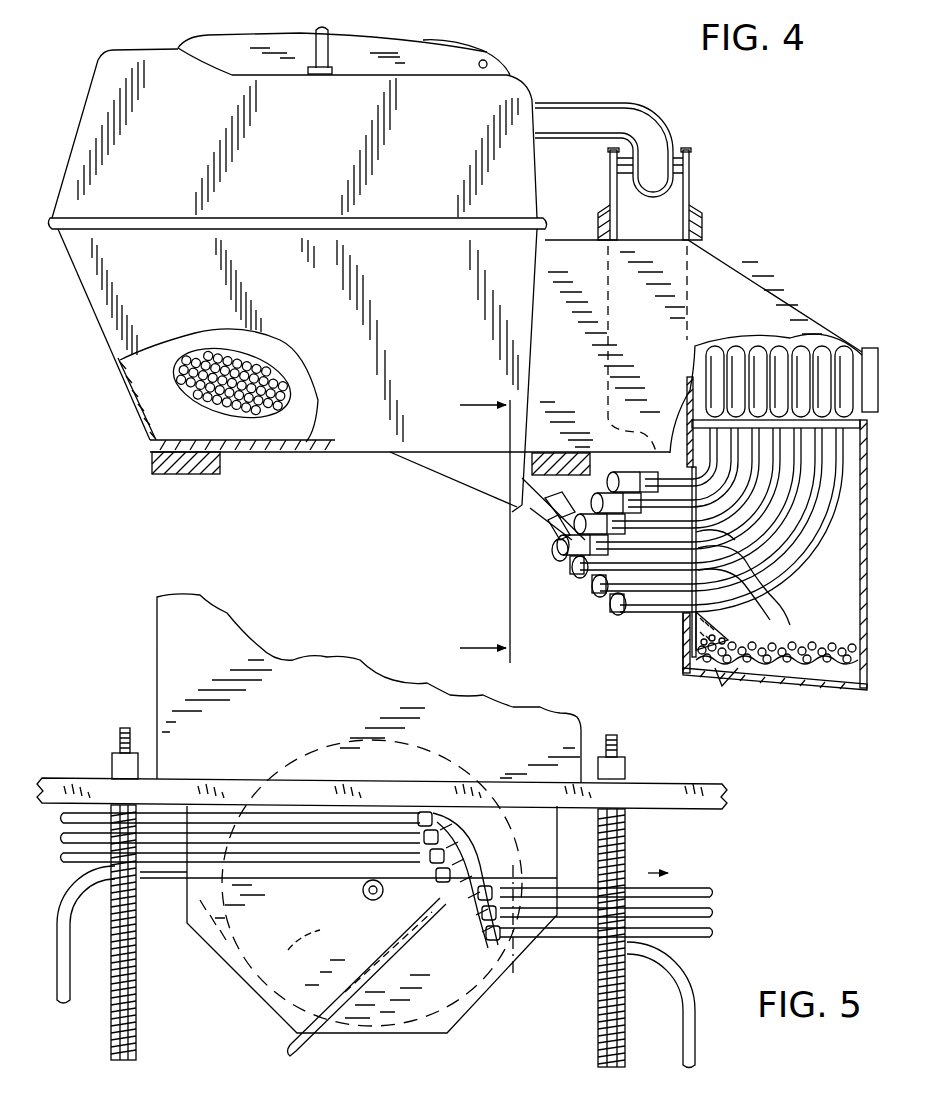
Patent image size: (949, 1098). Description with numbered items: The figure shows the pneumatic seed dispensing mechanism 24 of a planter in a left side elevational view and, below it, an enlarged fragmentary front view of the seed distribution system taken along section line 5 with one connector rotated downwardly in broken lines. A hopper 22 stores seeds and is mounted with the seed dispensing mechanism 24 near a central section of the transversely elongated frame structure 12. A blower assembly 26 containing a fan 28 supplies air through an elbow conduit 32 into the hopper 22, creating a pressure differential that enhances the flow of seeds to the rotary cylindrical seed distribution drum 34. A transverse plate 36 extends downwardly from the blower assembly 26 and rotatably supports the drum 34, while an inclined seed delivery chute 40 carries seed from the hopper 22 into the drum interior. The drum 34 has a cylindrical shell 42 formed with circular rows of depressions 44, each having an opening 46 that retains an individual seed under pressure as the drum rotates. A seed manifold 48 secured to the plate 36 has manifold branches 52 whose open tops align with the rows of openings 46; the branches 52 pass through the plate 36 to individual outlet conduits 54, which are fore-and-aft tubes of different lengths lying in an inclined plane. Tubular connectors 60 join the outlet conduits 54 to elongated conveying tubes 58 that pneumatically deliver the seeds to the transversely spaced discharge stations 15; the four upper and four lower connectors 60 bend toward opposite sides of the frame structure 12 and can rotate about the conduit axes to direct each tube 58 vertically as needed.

In FIG. 4, the section line 5- 5 is at (473, 527).
In FIG. 4, the frame structure 12 is at (200, 478).
In FIG. 5, the frame structure 12 is at (666, 780).
In FIG. 5, the discharge stations 15 is at (88, 1076).
In FIG. 4, the hopper 22 is at (84, 115).
In FIG. 5, the hopper 22 is at (515, 703).
In FIG. 4, the pneumatic seed dispensing mechanism 24 is at (872, 474).
In FIG. 5, the pneumatic seed dispensing mechanism 24 is at (380, 1040).
In FIG. 4, the blower assembly 26 is at (698, 172).
In FIG. 4, the fan 28 is at (690, 282).
In FIG. 4, the elbow conduit 32 is at (600, 103).
In FIG. 4, the seed distribution drum 34 is at (818, 680).
In FIG. 5, the seed distribution drum 34 is at (452, 1024).
In FIG. 4, the transverse plate 36 is at (683, 662).
In FIG. 5, the transverse plate 36 is at (293, 916).
In FIG. 4, the seed delivery chute 40 is at (700, 628).
In FIG. 4, the cylindrical shell 42 is at (772, 668).
In FIG. 4, the depressions 44 is at (745, 672).
In FIG. 4, the openings 46 is at (800, 346).
In FIG. 4, the seed manifold 48 is at (788, 596).
In FIG. 4, the manifold branches 52 is at (796, 545).
In FIG. 4, the outlet conduits 54 is at (748, 620).
In FIG. 5, the conveying tubes 58 is at (67, 818).
In FIG. 4, the tubular connectors 60 is at (600, 478).
In FIG. 5, the tubular connectors 60 is at (438, 817).